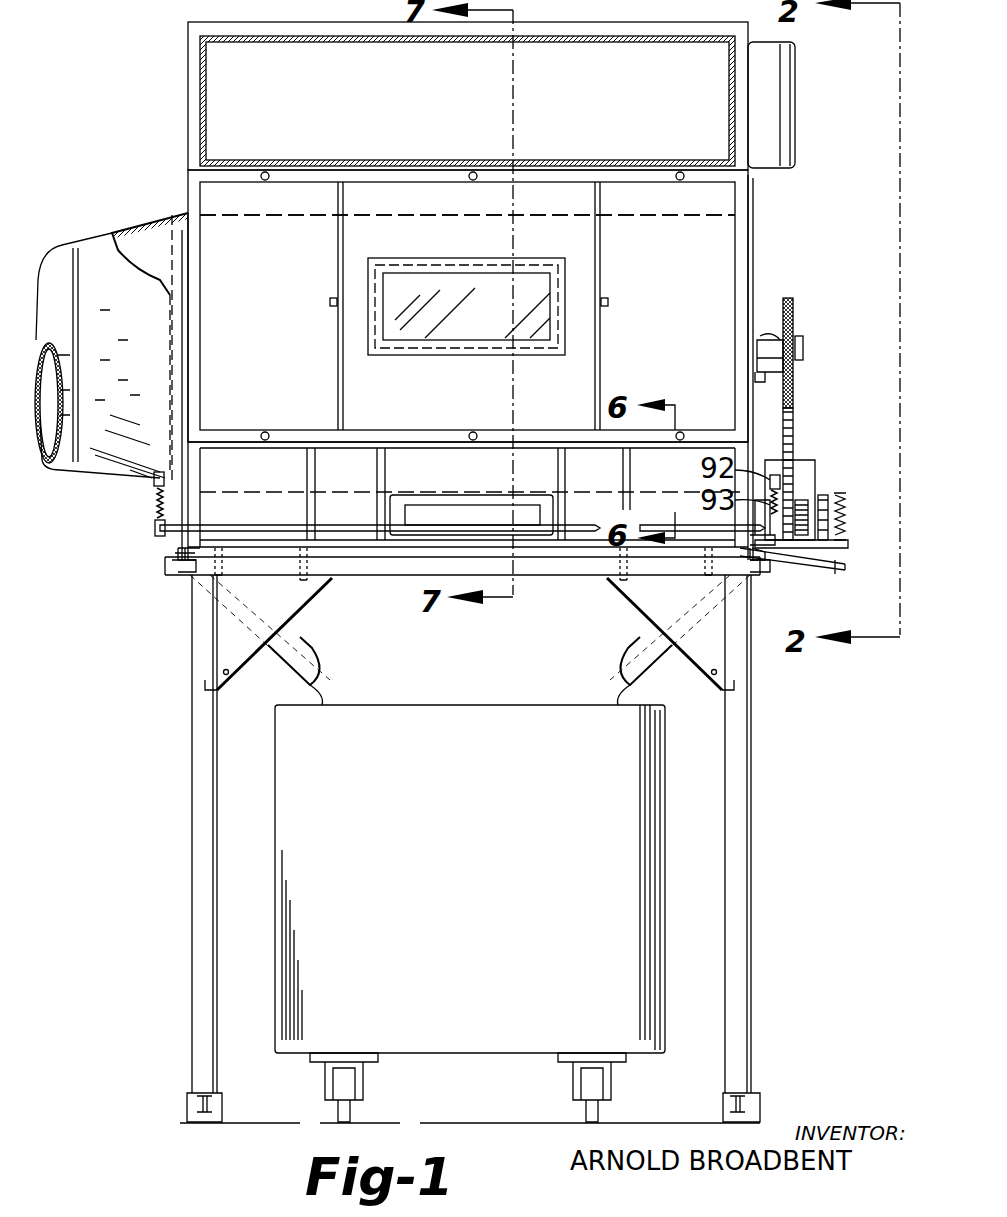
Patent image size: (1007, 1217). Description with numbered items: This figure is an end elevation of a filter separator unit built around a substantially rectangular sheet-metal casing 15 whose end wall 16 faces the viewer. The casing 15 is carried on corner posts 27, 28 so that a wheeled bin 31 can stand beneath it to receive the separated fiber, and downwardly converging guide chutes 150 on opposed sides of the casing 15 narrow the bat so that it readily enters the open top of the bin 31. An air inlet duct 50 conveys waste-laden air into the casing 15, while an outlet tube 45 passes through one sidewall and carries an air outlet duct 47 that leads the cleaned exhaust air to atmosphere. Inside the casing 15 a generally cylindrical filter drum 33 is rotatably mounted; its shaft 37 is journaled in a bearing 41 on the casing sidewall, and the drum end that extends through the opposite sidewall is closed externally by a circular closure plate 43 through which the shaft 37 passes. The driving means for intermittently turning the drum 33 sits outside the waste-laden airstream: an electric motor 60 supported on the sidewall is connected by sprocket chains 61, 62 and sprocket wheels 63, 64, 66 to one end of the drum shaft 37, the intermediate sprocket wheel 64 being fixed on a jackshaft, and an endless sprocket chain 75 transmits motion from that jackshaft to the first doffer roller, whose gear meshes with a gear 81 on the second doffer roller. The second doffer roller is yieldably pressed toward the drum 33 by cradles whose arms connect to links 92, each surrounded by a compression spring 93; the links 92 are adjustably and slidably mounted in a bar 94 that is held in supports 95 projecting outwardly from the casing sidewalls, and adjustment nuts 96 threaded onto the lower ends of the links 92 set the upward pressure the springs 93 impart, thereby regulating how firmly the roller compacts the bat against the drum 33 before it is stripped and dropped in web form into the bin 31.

The casing 15 is at (170, 78).
The air inlet duct 50 is at (200, 100).
The end wall 16 is at (684, 267).
The filter drum 33 is at (297, 215).
The closure plate 43 is at (753, 258).
The air outlet duct 47 is at (100, 240).
The outlet tube 45 is at (178, 242).
The filter drum shaft 37 is at (775, 338).
The sprocket wheel 66 is at (793, 312).
The bearing 41 is at (757, 340).
The sprocket chain 62 is at (793, 412).
The electric motor 60 is at (805, 460).
The link 92 is at (152, 478).
The compression spring 93 is at (157, 505).
The gear 81 is at (805, 500).
The endless sprocket chain 75 is at (825, 497).
The sprocket wheel 64 is at (845, 505).
The sprocket chain 61 is at (848, 543).
The sprocket wheel 63 is at (845, 566).
The adjustment nut 96 is at (160, 536).
The support 95 is at (185, 548).
The bar 94 is at (268, 525).
The guide chute 150 is at (300, 664).
The wheeled bin 31 is at (447, 818).
The corner post 27 is at (192, 850).
The corner post 28 is at (737, 852).